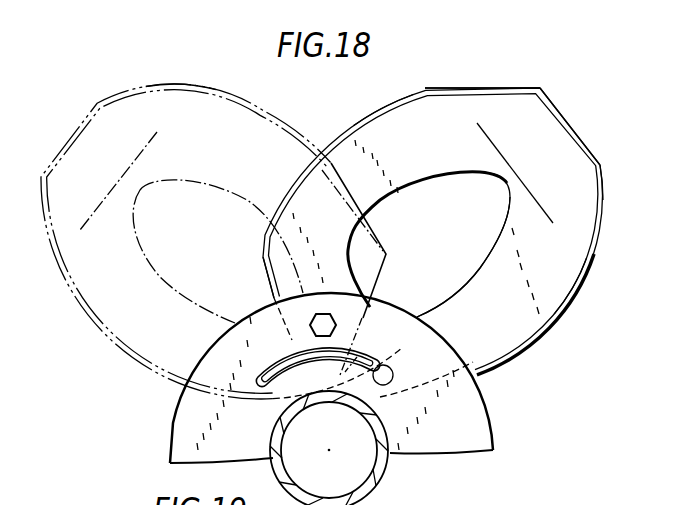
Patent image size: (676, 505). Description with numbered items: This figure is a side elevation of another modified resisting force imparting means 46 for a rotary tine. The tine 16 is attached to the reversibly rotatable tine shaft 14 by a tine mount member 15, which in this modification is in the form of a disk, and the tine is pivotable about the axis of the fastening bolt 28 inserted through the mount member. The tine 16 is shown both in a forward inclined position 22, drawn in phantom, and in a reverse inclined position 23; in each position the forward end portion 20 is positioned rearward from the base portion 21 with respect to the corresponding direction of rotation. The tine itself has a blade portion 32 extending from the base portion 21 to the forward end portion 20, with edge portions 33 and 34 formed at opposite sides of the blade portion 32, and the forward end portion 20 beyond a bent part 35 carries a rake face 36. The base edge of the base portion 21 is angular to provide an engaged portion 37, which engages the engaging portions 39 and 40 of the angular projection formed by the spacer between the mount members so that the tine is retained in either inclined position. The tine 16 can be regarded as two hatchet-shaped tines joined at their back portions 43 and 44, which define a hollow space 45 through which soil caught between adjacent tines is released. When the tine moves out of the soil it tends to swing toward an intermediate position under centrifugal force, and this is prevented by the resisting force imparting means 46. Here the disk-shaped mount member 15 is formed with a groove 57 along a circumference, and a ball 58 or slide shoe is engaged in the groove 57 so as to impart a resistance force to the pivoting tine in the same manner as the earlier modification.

The tine shaft 14 is at (347, 448).
The tine mount member 15 is at (175, 422).
The tine 16 is at (203, 78).
The forward end portion 20 is at (558, 110).
The base portion 21 is at (285, 250).
The forward inclined position 22 is at (221, 241).
The reverse inclined position 23 is at (605, 124).
The fastening bolt 28 is at (325, 313).
The blade portion 32 is at (440, 108).
The edge portion 33 is at (556, 322).
The edge portion 34 is at (396, 100).
The bent part 35 is at (540, 204).
The rake face 36 is at (578, 167).
The engaged portion 37 is at (270, 283).
The engaging portion 39 is at (304, 408).
The engaging portion 40 is at (351, 409).
The back portion 43 is at (468, 277).
The back portion 44 is at (448, 233).
The hollow space 45 is at (485, 243).
The resisting force imparting means 46 is at (287, 350).
The groove 57 is at (357, 357).
The ball 58 is at (391, 371).